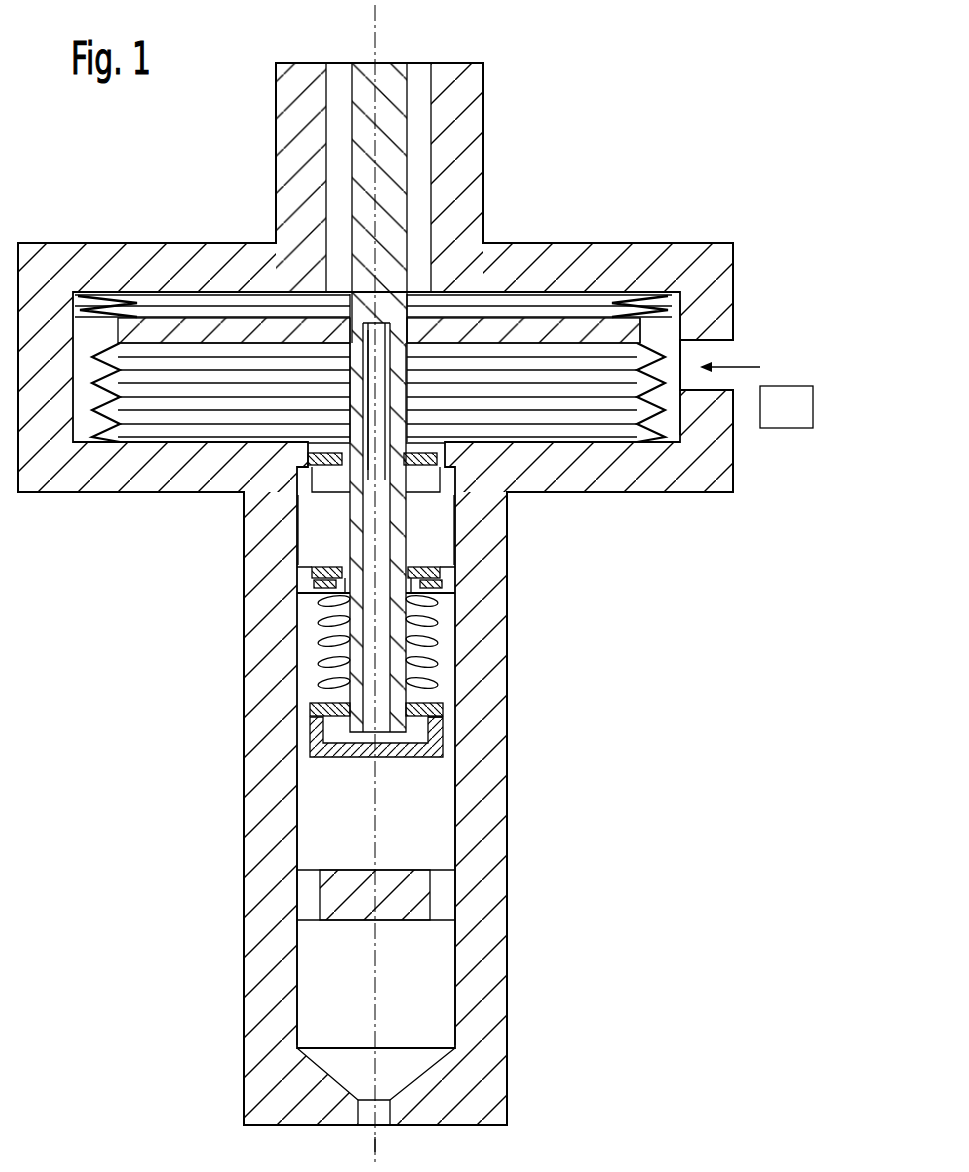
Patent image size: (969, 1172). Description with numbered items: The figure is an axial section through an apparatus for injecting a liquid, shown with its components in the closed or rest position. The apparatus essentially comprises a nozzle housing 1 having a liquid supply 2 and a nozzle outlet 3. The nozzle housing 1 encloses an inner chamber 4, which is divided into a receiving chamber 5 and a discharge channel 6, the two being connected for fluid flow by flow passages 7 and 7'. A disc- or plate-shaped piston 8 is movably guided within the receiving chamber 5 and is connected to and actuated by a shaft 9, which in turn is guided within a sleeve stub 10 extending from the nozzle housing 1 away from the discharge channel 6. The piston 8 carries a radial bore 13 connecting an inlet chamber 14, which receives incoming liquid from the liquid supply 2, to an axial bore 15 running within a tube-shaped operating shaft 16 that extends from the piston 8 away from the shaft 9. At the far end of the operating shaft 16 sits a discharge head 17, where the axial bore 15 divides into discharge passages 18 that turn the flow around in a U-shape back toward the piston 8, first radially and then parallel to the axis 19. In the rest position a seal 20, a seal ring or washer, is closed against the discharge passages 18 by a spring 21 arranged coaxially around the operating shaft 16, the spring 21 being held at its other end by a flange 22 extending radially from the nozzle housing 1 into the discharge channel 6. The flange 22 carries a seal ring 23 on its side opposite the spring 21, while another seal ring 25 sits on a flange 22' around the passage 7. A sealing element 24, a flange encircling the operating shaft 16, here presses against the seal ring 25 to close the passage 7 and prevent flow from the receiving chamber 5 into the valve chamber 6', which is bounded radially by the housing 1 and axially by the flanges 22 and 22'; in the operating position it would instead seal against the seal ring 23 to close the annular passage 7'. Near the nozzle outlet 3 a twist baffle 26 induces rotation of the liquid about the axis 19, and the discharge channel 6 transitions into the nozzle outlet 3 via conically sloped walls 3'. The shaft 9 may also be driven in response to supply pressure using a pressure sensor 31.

The nozzle housing 1 is at (189, 238).
The liquid supply 2 is at (722, 350).
The nozzle outlet 3 is at (294, 1095).
The sloped walls 3' is at (426, 1074).
The inner chamber 4 is at (320, 815).
The receiving chamber 5 is at (562, 372).
The discharge channel 6 is at (427, 867).
The valve chamber 6' is at (476, 446).
The flow passage 7 is at (482, 429).
The flow passage 7' is at (300, 526).
The piston 8 is at (232, 340).
The shaft 9 is at (397, 170).
The sleeve stub 10 is at (472, 92).
The radial bore 13 is at (515, 325).
The inlet chamber 14 is at (672, 323).
The axial bore 15 is at (432, 556).
The operating shaft 16 is at (434, 622).
The discharge head 17 is at (460, 716).
The discharge passages 18 is at (312, 745).
The axis 19 is at (378, 1145).
The seal 20 is at (312, 710).
The spring 21 is at (434, 648).
The flange 22 is at (436, 539).
The flange 22' is at (274, 489).
The seal ring 23 is at (315, 575).
The sealing element 24 is at (432, 532).
The seal ring 25 is at (299, 522).
The twist baffle 26 is at (415, 898).
The pressure sensor 31 is at (816, 409).